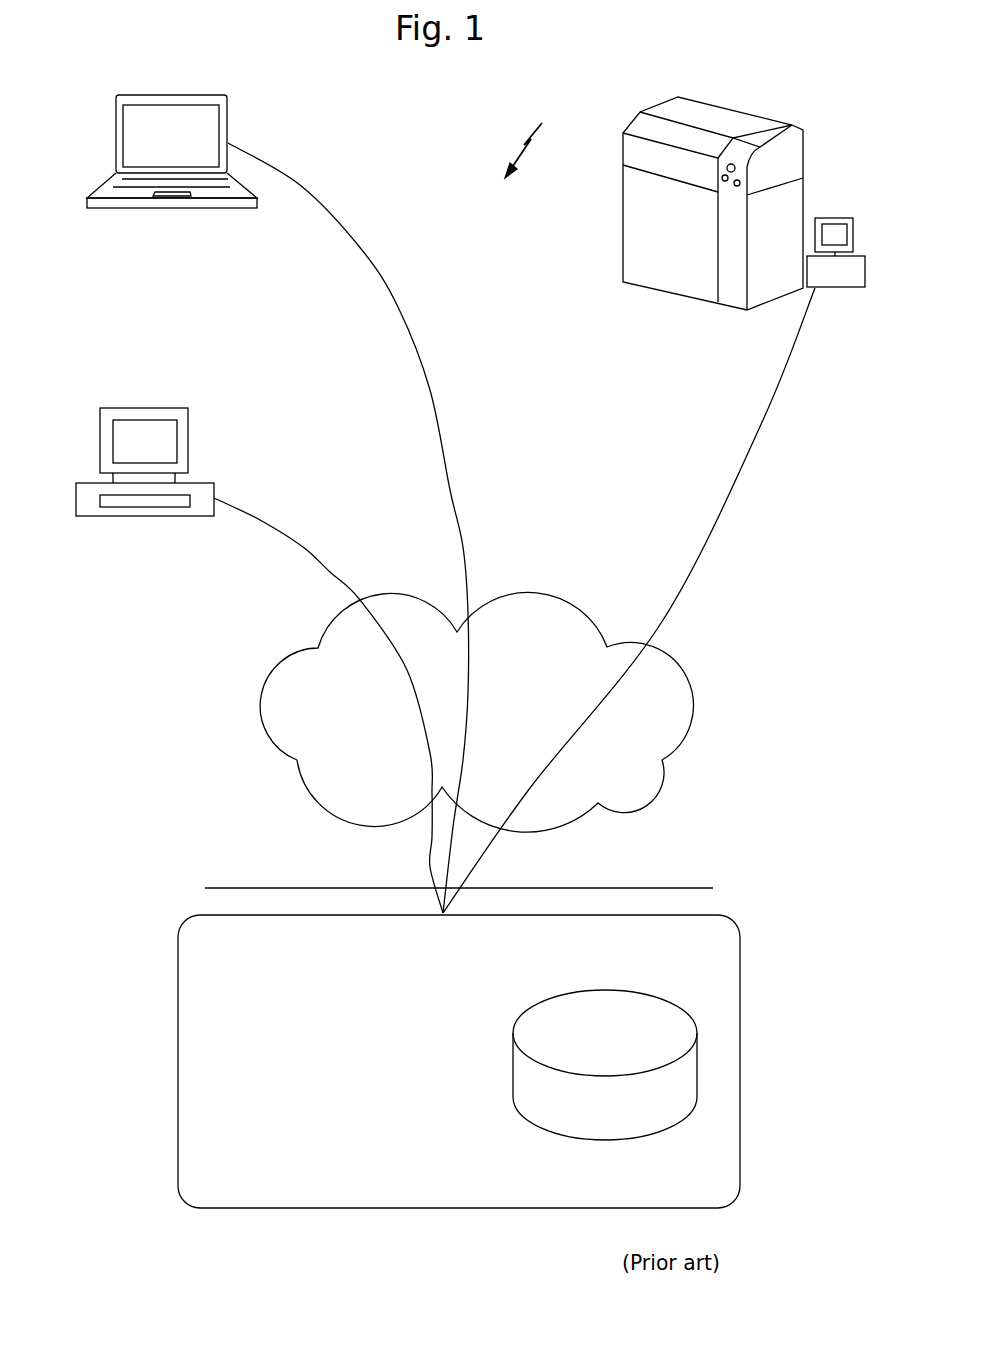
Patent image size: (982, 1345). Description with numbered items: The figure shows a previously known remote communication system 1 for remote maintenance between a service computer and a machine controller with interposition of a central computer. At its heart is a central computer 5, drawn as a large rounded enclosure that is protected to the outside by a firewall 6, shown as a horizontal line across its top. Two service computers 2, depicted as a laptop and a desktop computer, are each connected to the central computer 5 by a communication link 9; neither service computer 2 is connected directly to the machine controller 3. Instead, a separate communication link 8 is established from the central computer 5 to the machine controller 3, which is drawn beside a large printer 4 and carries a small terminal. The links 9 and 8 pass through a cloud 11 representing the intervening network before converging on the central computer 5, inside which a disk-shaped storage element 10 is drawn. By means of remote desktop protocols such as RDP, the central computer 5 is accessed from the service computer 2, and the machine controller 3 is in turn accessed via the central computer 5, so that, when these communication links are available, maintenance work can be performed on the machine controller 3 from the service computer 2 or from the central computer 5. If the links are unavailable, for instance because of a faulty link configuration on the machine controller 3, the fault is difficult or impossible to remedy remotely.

The remote communication system 1 is at (532, 141).
The service computer 2 is at (160, 208).
The machine controller 3 is at (836, 288).
The printer 4 is at (716, 113).
The central computer 5 is at (740, 982).
The firewall 6 is at (662, 888).
The communication link 8 is at (735, 483).
The communication link 9 is at (362, 250).
The storage database 10 is at (695, 1080).
The network 11 is at (532, 593).